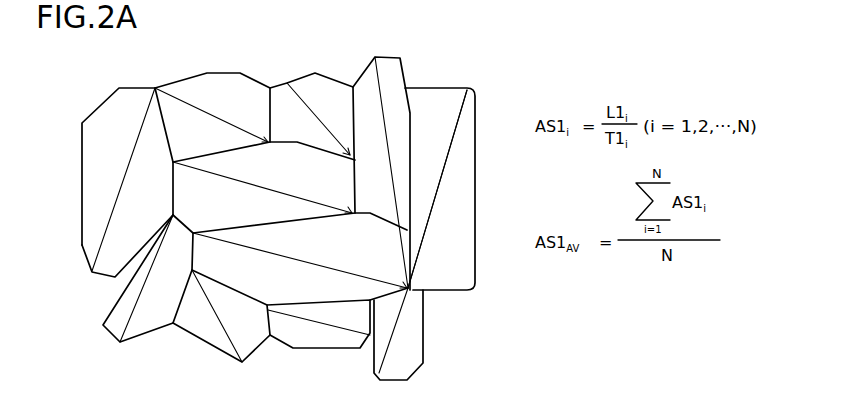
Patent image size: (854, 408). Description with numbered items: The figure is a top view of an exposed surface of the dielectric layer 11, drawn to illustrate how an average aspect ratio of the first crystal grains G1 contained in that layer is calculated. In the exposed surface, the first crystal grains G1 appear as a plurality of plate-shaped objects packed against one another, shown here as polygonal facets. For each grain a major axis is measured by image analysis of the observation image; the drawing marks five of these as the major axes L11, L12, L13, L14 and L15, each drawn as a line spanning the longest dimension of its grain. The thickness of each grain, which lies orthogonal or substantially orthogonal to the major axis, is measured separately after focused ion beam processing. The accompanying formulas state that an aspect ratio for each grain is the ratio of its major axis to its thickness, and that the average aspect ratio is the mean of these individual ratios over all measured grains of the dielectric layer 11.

The dielectric layer 11 is at (472, 79).
The first crystal grains G1 is at (445, 193).
The major axis L1_1 L11 is at (300, 260).
The major axis L1_2 L12 is at (262, 188).
The major axis L1_3 L13 is at (384, 172).
The major axis L1_4 L14 is at (437, 189).
The major axis L1_5 L15 is at (211, 116).